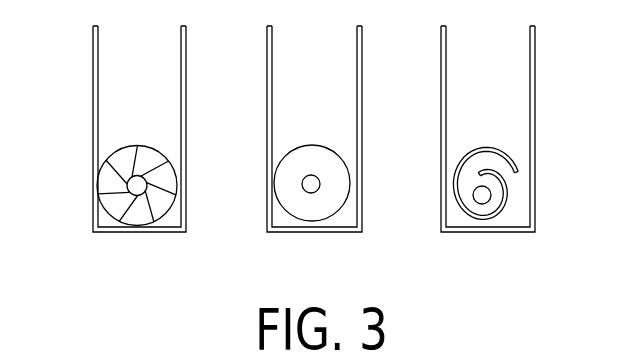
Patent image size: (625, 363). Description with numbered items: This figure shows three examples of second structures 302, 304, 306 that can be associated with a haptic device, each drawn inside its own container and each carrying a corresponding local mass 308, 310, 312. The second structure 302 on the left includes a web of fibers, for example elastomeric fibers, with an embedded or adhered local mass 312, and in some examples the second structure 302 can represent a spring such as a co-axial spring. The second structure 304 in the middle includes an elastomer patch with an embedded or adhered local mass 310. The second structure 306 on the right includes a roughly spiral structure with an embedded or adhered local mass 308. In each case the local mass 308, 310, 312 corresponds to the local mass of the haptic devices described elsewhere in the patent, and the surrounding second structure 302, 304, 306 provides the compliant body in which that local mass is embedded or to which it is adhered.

The second structure 302 is at (114, 223).
The second structure 304 is at (293, 223).
The second structure 306 is at (473, 222).
The local mass 308 is at (135, 196).
The local mass 310 is at (311, 194).
The local mass 312 is at (486, 204).